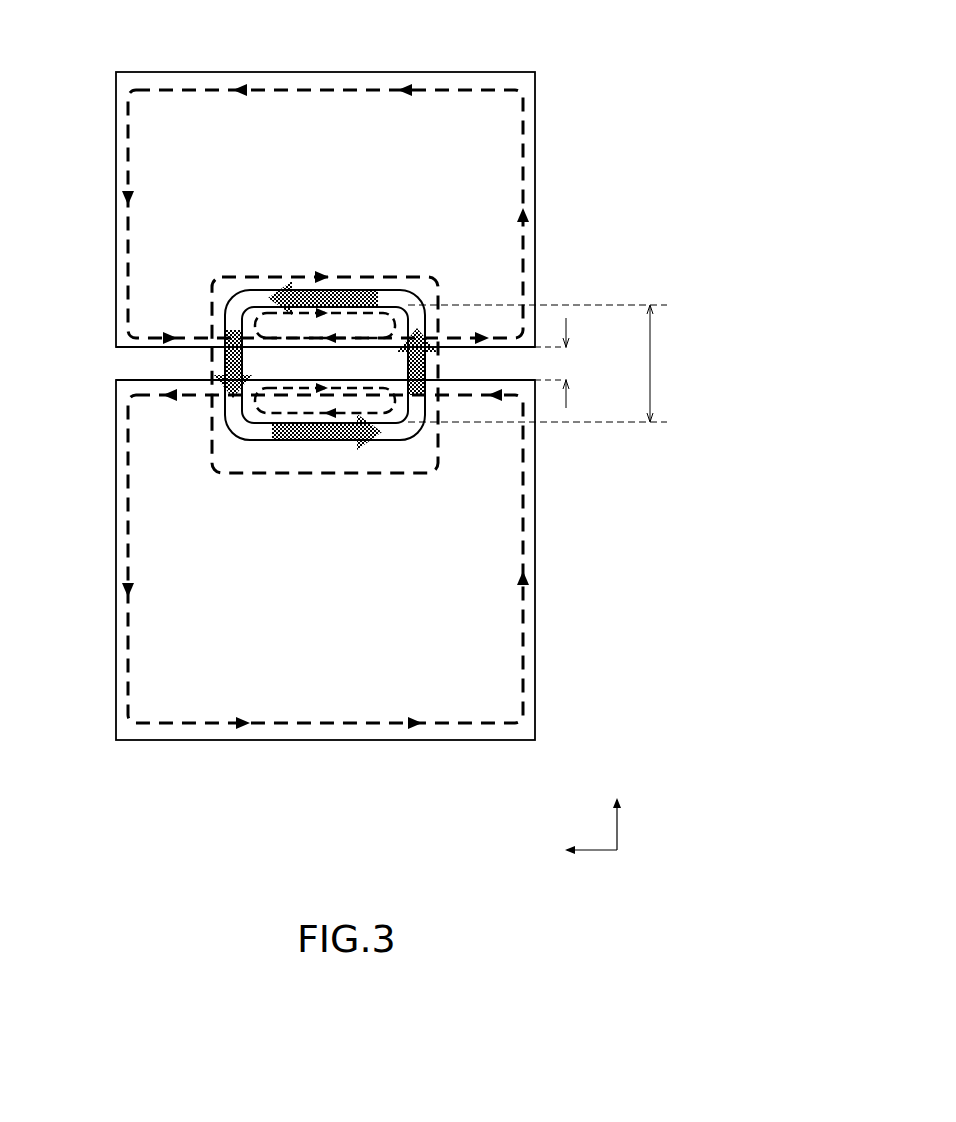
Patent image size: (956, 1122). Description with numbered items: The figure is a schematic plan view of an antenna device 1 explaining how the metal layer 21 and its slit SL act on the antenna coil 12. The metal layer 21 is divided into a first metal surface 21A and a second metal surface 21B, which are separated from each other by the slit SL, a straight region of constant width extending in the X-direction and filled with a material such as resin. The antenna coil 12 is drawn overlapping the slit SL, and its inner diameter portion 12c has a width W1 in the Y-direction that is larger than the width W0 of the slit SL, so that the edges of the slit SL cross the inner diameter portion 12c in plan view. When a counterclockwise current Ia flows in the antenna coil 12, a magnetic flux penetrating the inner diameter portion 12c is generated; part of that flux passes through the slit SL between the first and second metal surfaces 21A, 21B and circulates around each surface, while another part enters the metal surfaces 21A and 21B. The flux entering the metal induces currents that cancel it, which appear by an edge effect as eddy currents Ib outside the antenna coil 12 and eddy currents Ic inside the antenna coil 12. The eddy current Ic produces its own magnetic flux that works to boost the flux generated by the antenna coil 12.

The antenna device 1 is at (348, 30).
The antenna coil 12 is at (225, 317).
The inner diameter portion 12c is at (357, 279).
The metal layer 21 is at (290, 405).
The first metal surface 21A is at (106, 349).
The second metal surface 21B is at (106, 378).
The slit SL is at (138, 366).
The counterclockwise current Ia is at (338, 361).
The eddy current Ib is at (524, 144).
The eddy current Ic is at (392, 320).
The width of the slit W0 is at (573, 363).
The width of the inner diameter portion W1 is at (552, 363).